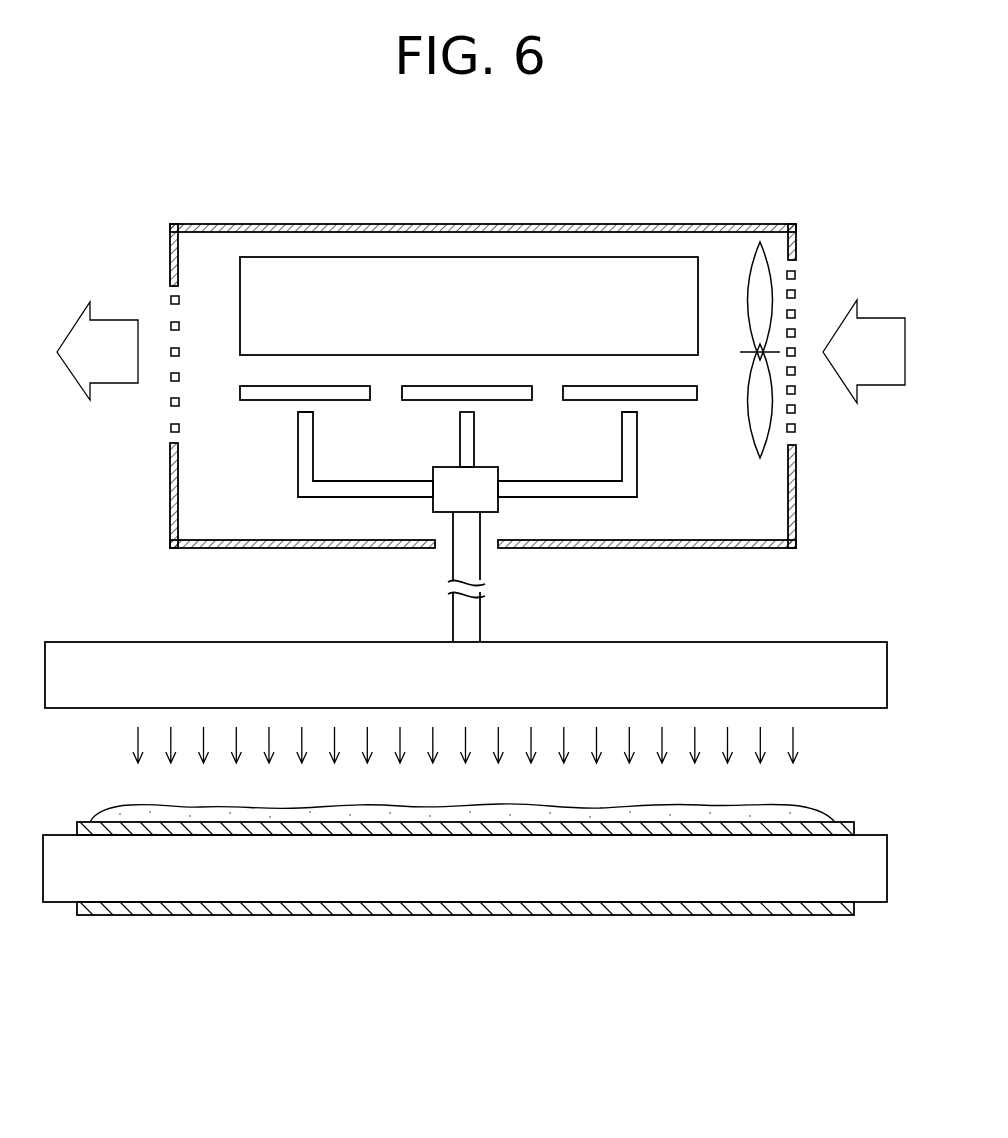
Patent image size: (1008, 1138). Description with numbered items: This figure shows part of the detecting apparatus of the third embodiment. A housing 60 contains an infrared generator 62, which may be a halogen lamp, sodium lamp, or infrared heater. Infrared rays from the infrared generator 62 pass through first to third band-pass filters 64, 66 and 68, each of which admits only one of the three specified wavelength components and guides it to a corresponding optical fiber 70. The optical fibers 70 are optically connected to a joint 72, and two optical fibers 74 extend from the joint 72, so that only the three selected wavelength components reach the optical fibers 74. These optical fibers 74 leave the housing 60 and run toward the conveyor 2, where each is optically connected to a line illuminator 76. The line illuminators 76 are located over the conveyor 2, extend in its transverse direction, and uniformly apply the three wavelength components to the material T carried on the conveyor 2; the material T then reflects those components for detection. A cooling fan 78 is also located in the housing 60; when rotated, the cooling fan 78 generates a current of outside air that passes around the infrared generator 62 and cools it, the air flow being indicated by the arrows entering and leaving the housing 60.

The conveyor 2 is at (157, 925).
The housing 60 is at (796, 473).
The infrared generator 62 is at (582, 257).
The first band-pass filter 64 is at (264, 400).
The second band-pass filter 66 is at (428, 400).
The third band-pass filter 68 is at (592, 400).
The optical fibers 70 is at (297, 488).
The joint 72 is at (498, 504).
The optical fibers 74 is at (481, 570).
The line illuminators 76 is at (832, 641).
The cooling fan 78 is at (758, 458).
The material T is at (818, 805).